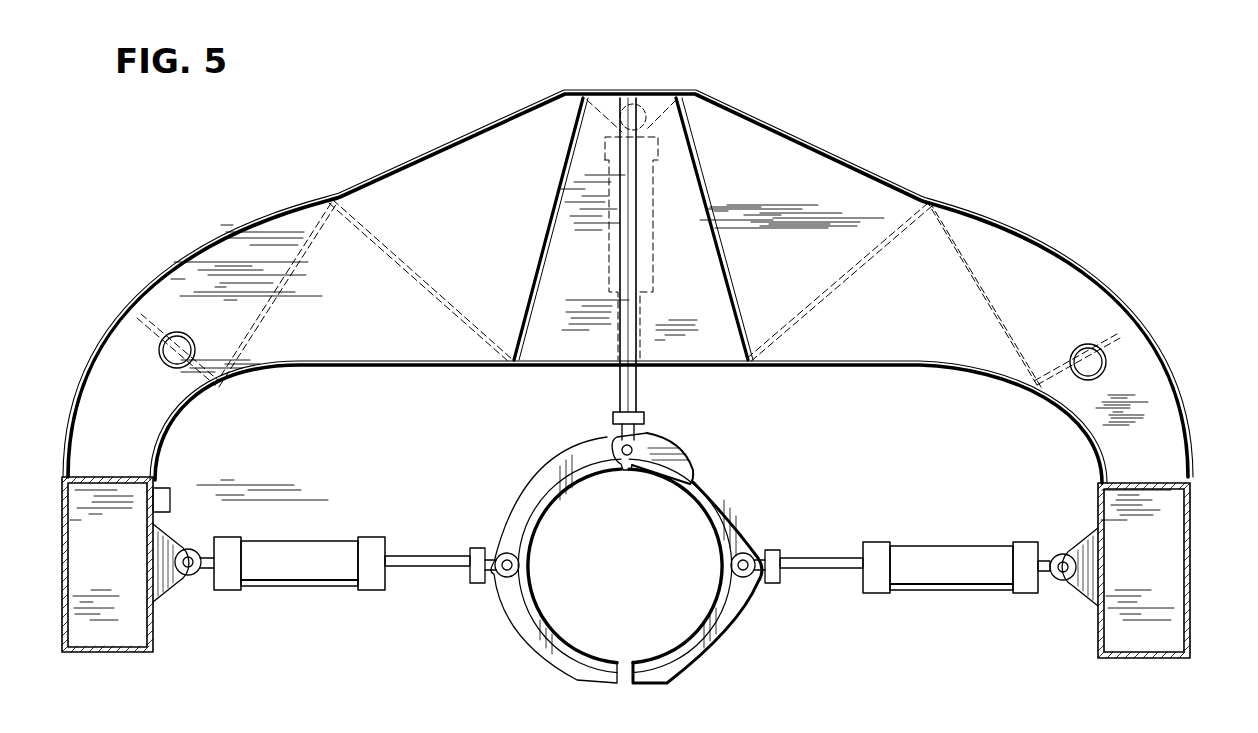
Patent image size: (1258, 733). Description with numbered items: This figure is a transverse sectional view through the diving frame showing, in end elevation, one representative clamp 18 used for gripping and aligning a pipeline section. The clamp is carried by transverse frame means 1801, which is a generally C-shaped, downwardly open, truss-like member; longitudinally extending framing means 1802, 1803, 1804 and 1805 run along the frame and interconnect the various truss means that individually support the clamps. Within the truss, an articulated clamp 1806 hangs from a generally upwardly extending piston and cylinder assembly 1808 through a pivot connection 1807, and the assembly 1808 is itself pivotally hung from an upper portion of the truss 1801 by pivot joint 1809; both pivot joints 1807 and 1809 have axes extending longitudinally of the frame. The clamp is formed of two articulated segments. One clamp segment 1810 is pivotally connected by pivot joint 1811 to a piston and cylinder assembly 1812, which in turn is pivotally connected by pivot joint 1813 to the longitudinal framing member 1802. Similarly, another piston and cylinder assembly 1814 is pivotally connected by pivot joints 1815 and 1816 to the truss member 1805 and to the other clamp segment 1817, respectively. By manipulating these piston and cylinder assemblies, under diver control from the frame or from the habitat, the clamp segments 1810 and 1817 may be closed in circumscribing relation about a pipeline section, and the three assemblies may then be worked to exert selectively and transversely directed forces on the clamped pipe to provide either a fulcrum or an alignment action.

The clamp 18 is at (924, 183).
The transverse frame means 1801 is at (1145, 430).
The longitudinally extending framing means 1802 is at (1172, 548).
The longitudinally extending framing means 1803 is at (1094, 366).
The longitudinally extending framing means 1804 is at (170, 354).
The longitudinally extending framing means 1805 is at (152, 612).
The articulated clamp 1806 is at (668, 458).
The pivot connection 1807 is at (620, 448).
The piston and cylinder assembly 1808 is at (653, 250).
The pivot joint 1809 is at (642, 104).
The clamp segment 1810 is at (738, 598).
The pivot joint 1811 is at (745, 556).
The piston and cylinder assembly 1812 is at (925, 558).
The pivot joint 1813 is at (1060, 575).
The piston and cylinder assembly 1814 is at (325, 570).
The pivot joint 1815 is at (185, 550).
The pivot joint 1816 is at (498, 577).
The clamp segment 1817 is at (525, 513).